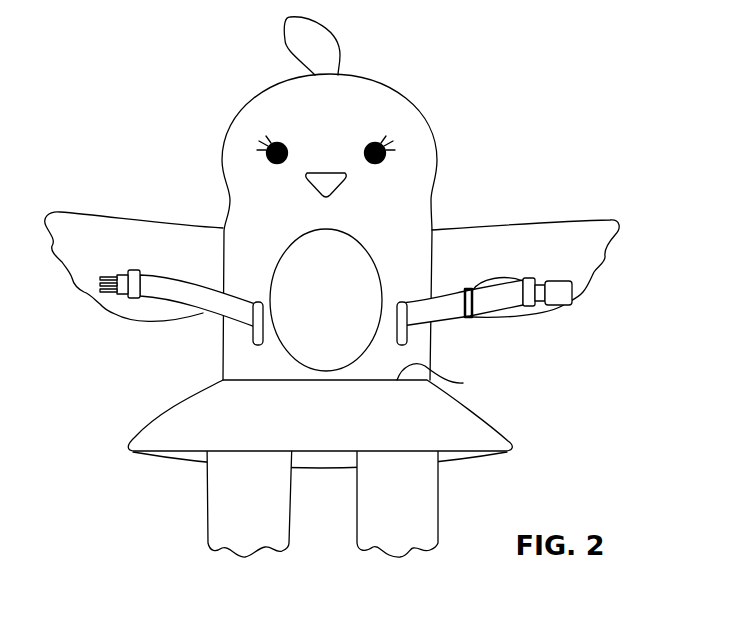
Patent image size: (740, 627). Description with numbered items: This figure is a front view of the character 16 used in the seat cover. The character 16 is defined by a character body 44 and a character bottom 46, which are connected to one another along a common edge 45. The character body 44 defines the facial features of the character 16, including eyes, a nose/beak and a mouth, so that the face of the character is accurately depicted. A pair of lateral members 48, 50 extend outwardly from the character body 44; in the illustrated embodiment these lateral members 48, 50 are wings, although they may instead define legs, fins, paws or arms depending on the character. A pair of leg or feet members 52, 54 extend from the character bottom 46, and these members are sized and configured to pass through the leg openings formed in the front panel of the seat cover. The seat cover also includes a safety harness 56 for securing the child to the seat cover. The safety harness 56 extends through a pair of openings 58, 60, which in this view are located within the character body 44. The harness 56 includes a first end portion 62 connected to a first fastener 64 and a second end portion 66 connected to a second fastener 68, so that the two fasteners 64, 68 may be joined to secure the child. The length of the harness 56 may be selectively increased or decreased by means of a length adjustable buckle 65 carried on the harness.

The character 16 is at (417, 96).
The character body 44 is at (376, 222).
The common edge 45 is at (463, 383).
The character bottom 46 is at (444, 421).
The lateral member 48 is at (103, 228).
The lateral member 50 is at (578, 230).
The leg or feet member 52 is at (217, 523).
The leg or feet member 54 is at (430, 533).
The safety harness 56 is at (205, 312).
The opening 58 is at (256, 303).
The opening 60 is at (401, 303).
The first end portion 62 is at (165, 300).
The first fastener 64 is at (112, 296).
The length adjustable buckle 65 is at (525, 306).
The second end portion 66 is at (496, 302).
The second fastener 68 is at (572, 292).